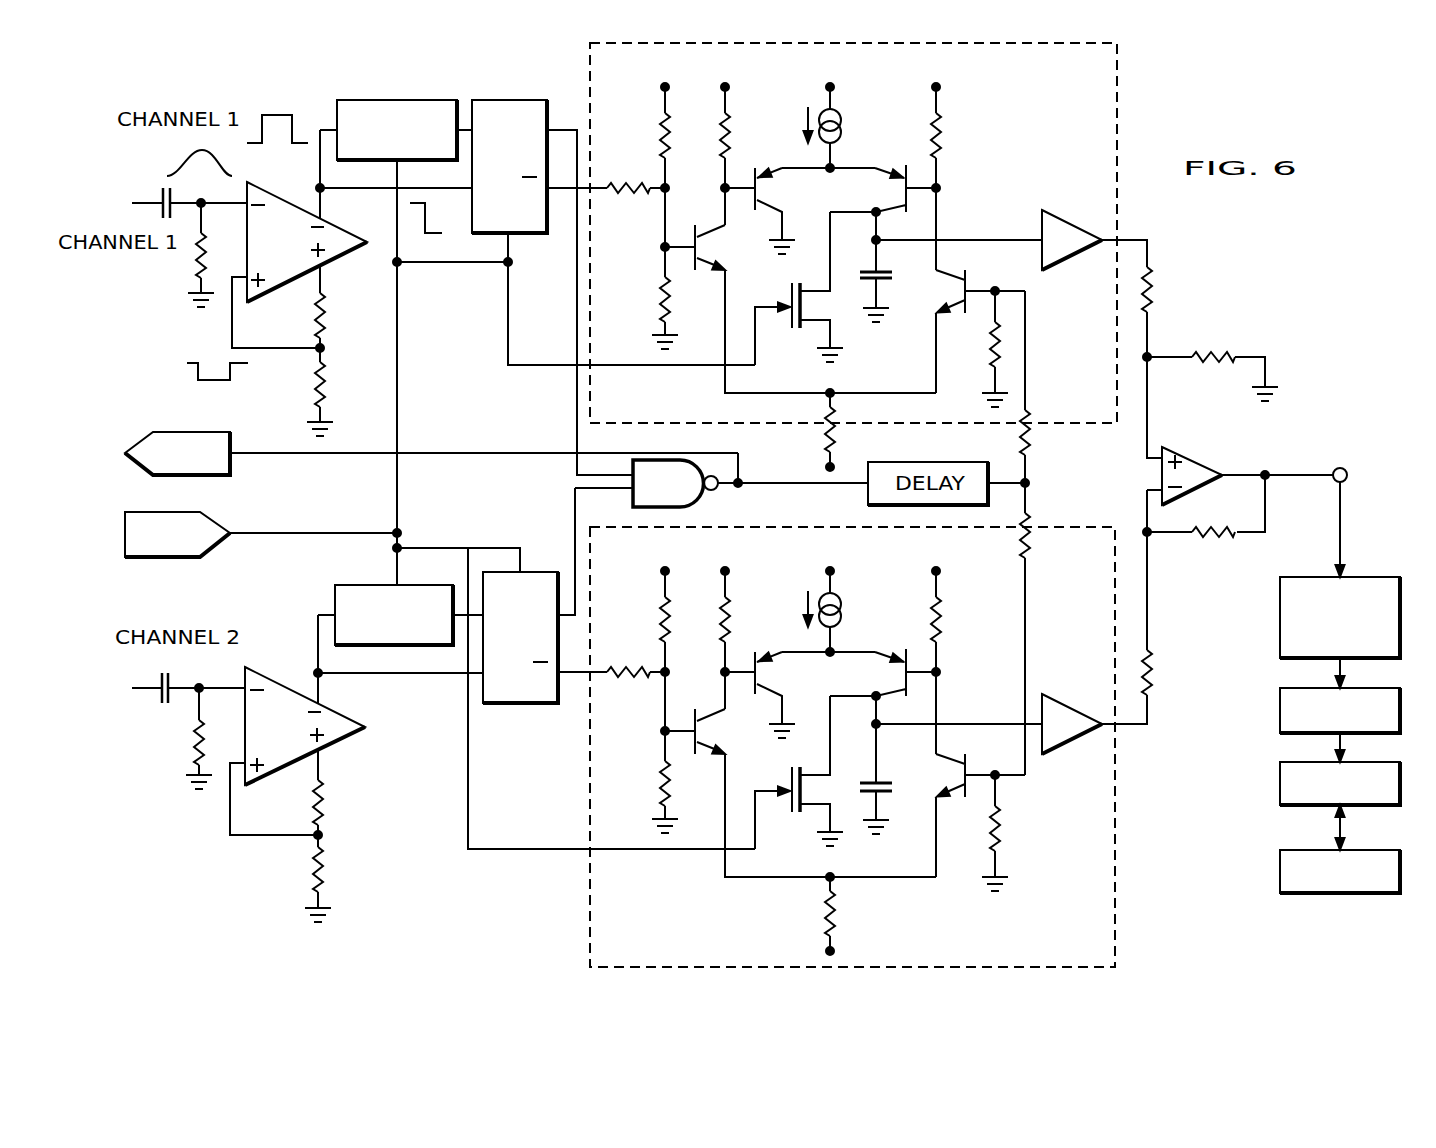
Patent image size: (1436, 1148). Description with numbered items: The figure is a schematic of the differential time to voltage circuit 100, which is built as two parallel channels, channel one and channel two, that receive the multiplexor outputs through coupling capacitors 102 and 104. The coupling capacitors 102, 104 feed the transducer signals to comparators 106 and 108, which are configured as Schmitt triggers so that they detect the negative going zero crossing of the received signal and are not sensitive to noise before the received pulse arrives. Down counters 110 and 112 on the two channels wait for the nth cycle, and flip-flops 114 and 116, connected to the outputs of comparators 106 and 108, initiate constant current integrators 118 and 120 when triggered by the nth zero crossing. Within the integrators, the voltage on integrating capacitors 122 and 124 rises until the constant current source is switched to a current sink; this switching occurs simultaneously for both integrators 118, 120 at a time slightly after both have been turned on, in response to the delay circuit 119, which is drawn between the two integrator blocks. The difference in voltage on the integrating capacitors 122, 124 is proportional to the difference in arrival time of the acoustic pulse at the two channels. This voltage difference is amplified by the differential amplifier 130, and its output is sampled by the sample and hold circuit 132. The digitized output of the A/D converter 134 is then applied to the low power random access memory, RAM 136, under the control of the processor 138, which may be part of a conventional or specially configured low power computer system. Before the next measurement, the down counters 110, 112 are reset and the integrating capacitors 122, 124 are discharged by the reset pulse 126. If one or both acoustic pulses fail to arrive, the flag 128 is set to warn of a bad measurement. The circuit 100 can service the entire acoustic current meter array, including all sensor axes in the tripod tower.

The differential time to voltage circuit 100 is at (257, 866).
The coupling capacitor 102 is at (160, 195).
The coupling capacitor 104 is at (163, 698).
The comparator 106 is at (357, 251).
The comparator 108 is at (330, 748).
The down counter 110 is at (411, 99).
The down counter 112 is at (378, 584).
The flip-flop 114 is at (537, 99).
The flip-flop 116 is at (540, 704).
The constant current integrator 118 is at (590, 90).
The delay circuit 119 is at (578, 481).
The constant current integrator 120 is at (1117, 880).
The integrating capacitor 122 is at (883, 279).
The integrating capacitor 124 is at (882, 792).
The reset pulse 126 is at (375, 529).
The flag 128 is at (373, 447).
The differential amplifier 130 is at (1195, 459).
The sample and hold circuit 132 is at (1329, 576).
The A/D converter 134 is at (1280, 720).
The RAM 136 is at (1280, 793).
The processor 138 is at (1280, 881).